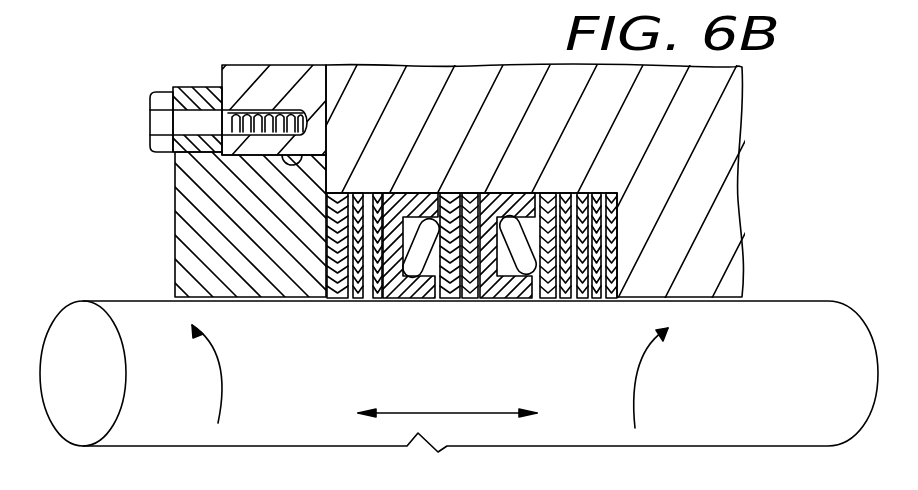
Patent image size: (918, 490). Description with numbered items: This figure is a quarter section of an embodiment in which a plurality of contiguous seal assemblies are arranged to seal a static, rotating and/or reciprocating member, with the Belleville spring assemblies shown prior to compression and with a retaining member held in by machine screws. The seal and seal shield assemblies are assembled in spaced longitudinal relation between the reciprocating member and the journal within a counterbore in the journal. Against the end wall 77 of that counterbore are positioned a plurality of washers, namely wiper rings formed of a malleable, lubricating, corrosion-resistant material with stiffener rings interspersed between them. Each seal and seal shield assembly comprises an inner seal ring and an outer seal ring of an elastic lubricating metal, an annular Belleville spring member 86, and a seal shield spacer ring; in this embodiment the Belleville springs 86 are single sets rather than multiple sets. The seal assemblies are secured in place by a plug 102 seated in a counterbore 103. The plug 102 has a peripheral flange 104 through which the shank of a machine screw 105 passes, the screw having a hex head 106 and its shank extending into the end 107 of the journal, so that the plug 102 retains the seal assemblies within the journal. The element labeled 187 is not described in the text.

The end wall 77 is at (617, 258).
The annular Belleville spring member 86 is at (535, 193).
The spring-loaded seal ring 187 is at (475, 174).
The plug 102 is at (242, 287).
The counterbore 103 is at (318, 157).
The peripheral flange 104 is at (188, 88).
The machine screw 105 is at (203, 126).
The hex head 106 is at (150, 124).
The end 107 is at (275, 80).